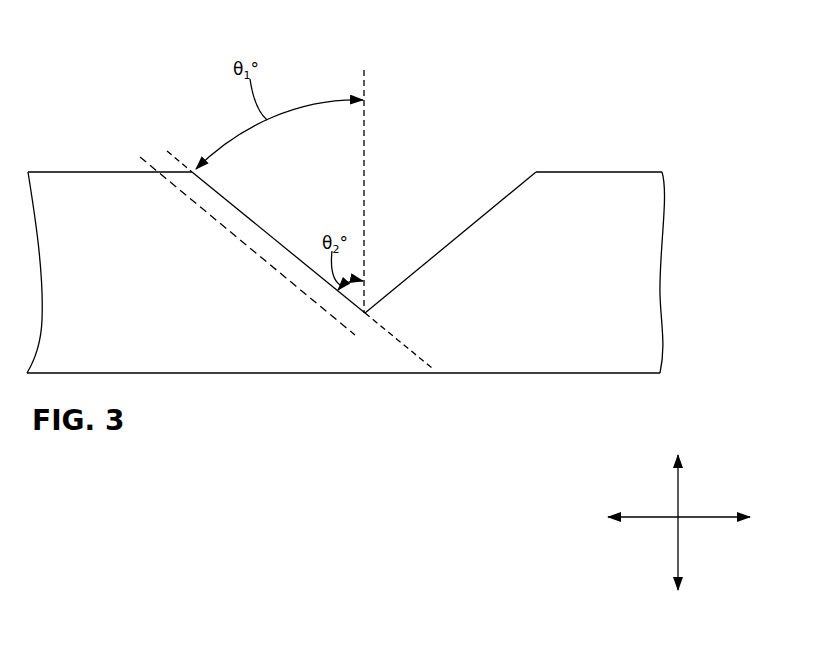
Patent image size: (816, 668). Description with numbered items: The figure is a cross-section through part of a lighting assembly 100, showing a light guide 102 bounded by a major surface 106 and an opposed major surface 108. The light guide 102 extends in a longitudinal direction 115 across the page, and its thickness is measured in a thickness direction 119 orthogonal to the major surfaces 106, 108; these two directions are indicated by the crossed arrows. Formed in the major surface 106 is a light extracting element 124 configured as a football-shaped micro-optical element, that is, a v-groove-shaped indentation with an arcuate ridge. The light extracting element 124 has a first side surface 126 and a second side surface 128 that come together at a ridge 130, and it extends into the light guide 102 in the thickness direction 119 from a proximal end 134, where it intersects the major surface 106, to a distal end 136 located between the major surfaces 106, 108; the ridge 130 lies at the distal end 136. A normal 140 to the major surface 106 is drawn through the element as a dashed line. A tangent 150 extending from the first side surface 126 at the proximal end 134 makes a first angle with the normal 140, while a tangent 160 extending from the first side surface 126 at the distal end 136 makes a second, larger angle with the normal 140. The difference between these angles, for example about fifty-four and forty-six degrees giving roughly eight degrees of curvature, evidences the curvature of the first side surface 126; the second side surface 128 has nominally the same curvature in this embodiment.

The cutting tool assembly 100 is at (80, 120).
The light guide 102 is at (612, 210).
The major surface 106 is at (573, 171).
The major surface 108 is at (472, 373).
The longitudinal direction 115 is at (657, 518).
The thickness direction 119 is at (680, 496).
The light extracting element 124 is at (424, 157).
The first side surface 126 is at (350, 303).
The second side surface 128 is at (450, 247).
The ridge 130 is at (365, 313).
The proximal end 134 is at (525, 168).
The distal end 136 is at (392, 313).
The normal 140 is at (365, 112).
The tangent 150 is at (163, 143).
The tangent 160 is at (192, 192).